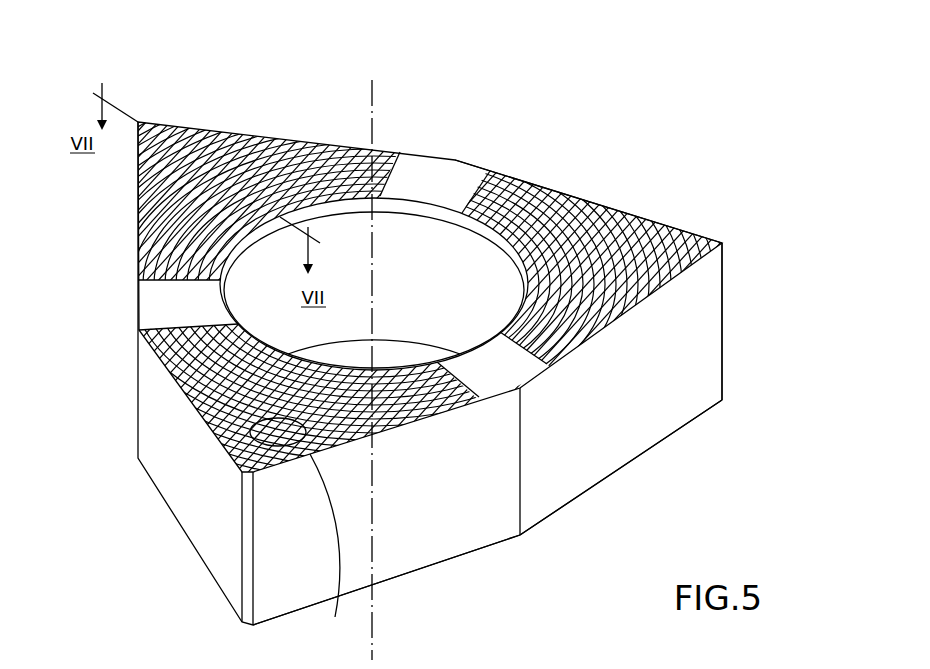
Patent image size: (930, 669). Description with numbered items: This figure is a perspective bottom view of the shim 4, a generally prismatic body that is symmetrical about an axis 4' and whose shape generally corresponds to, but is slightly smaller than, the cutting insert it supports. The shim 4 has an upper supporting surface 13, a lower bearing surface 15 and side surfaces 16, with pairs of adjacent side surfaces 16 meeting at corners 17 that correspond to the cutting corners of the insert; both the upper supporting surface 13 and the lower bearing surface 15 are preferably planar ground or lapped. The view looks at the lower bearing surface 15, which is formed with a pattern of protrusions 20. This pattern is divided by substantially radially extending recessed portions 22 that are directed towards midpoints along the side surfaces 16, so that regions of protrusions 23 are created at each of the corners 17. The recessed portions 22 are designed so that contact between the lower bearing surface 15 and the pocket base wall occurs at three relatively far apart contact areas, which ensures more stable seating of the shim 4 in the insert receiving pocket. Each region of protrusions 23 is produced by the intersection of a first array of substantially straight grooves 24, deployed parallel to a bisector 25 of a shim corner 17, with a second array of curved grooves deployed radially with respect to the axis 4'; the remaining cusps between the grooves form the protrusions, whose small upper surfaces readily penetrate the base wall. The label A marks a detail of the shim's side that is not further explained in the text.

The shim 4 is at (465, 300).
The axis 4' is at (412, 360).
The upper supporting surface 13 is at (443, 563).
The lower bearing surface 15 is at (597, 208).
The side surfaces 16 is at (690, 352).
The corners 17 is at (248, 552).
The pattern of protrusions 20 is at (525, 90).
The recessed portions 22 is at (450, 178).
The regions of protrusions 23 is at (683, 214).
The first array of substantially straight grooves 24 is at (223, 447).
The bisector 25 is at (240, 468).
The curve on side face A is at (325, 550).